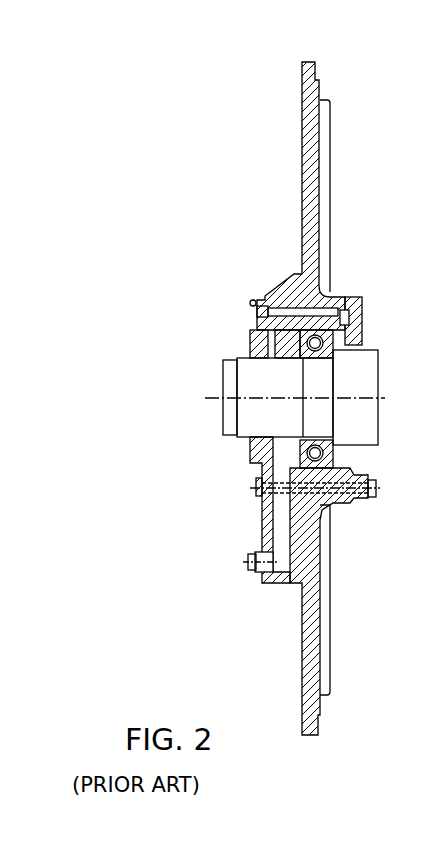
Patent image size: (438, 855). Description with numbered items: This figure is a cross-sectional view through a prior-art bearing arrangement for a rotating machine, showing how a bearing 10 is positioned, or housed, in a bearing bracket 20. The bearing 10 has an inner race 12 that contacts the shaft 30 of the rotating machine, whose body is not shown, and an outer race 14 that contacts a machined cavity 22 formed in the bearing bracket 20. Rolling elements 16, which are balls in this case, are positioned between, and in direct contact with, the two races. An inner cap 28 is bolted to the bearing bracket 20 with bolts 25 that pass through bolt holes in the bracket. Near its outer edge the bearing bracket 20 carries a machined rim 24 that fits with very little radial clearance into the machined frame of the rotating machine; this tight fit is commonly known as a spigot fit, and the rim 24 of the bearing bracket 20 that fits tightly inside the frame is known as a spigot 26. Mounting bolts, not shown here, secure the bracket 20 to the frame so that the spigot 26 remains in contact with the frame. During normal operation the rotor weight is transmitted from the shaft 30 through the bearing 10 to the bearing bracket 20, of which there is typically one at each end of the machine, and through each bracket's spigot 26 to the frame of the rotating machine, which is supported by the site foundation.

The bearing 10 is at (285, 340).
The inner race 12 is at (258, 352).
The outer race 14 is at (255, 305).
The rolling elements 16 is at (380, 372).
The bearing bracket 20 is at (300, 652).
The machined cavity 22 is at (350, 330).
The machined rim 24 is at (318, 66).
The bolts 25 is at (257, 490).
The spigot 26 is at (322, 92).
The inner cap 28 is at (375, 481).
The shaft 30 is at (222, 408).